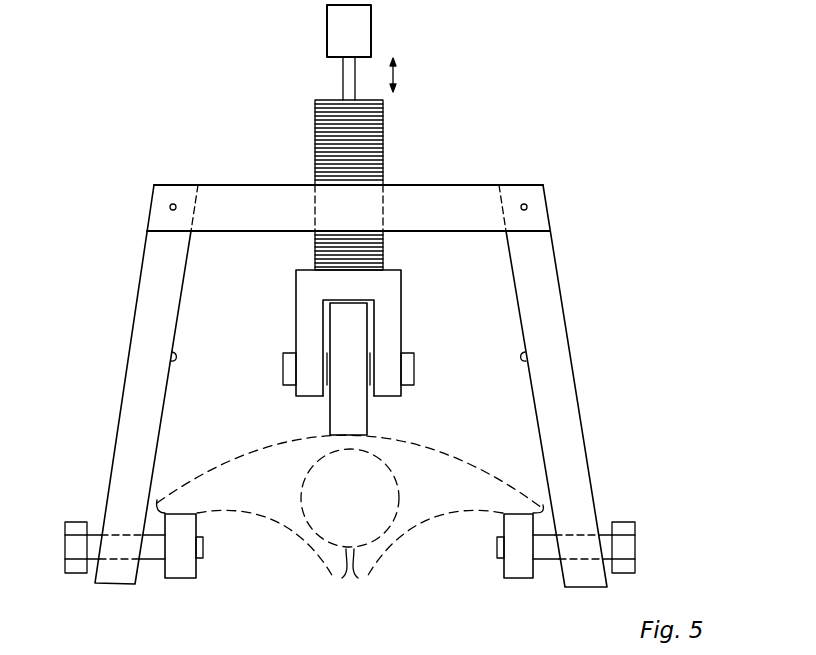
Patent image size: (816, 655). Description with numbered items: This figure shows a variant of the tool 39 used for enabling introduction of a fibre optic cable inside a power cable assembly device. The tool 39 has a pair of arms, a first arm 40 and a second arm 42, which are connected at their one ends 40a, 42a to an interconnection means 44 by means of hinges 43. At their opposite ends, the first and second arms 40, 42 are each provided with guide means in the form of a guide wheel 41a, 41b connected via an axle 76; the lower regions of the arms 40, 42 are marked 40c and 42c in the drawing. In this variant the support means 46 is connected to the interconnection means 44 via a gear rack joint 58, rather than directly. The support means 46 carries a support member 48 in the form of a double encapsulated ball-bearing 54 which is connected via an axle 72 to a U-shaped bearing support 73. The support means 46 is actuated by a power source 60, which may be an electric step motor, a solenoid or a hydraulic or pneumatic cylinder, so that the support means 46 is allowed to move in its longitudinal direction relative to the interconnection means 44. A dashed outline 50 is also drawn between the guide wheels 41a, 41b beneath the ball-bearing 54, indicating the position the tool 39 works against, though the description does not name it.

The tool 39 is at (488, 77).
The first arm 40 is at (121, 356).
The end of first arm 40a is at (171, 187).
The pivot of left arm 40c is at (169, 357).
The guide wheel 41a is at (183, 578).
The guide wheel 41b is at (517, 578).
The second arm 42 is at (575, 358).
The end of second arm 42a is at (529, 190).
The pivot of right arm 42c is at (528, 357).
The hinge 43 is at (170, 207).
The interconnection means 44 is at (443, 186).
The support means 46 is at (374, 258).
The support member 48 is at (356, 352).
The strap / belt 50 is at (350, 446).
The double encapsulated ball-bearing 54 is at (345, 417).
The gear rack joint 58 is at (322, 204).
The power source 60 is at (358, 32).
The axle 72 is at (290, 369).
The U-shaped bearing support 73 is at (296, 318).
The axle 76 is at (204, 548).